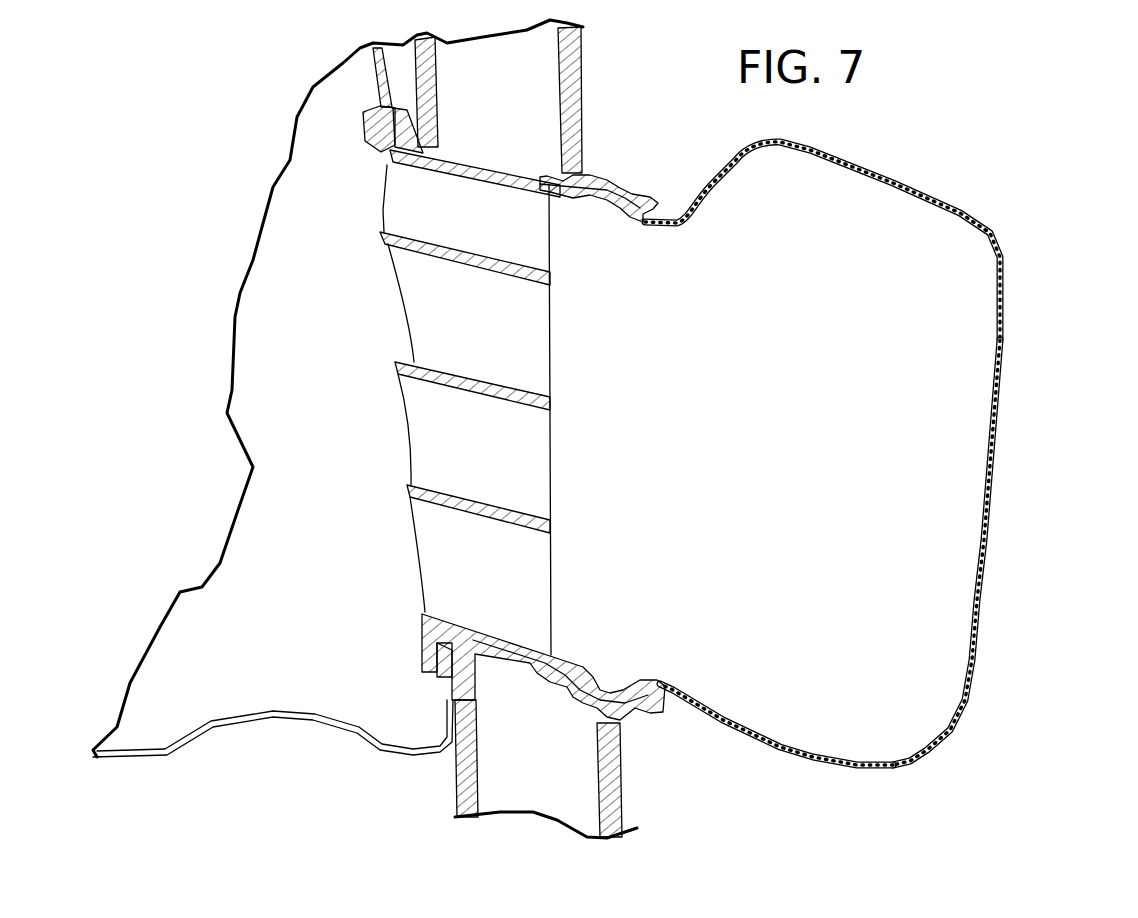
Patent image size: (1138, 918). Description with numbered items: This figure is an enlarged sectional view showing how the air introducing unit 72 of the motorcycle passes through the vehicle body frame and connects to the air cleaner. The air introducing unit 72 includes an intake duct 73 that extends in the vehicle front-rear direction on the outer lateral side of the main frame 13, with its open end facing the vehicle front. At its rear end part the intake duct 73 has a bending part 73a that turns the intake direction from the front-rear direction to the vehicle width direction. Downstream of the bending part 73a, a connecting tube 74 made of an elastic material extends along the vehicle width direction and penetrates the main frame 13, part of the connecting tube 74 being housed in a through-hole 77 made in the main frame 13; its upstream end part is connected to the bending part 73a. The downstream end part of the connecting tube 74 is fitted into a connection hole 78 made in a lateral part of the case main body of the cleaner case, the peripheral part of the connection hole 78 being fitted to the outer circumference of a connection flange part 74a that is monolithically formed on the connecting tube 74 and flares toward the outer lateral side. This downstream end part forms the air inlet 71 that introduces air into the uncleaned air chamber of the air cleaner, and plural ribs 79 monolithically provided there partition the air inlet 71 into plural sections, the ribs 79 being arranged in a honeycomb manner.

The main frame 13 is at (467, 773).
The air inlet 71 is at (483, 623).
The air introducing unit 72 is at (886, 486).
The intake duct 73 is at (726, 725).
The bending part 73a is at (933, 197).
The connecting tube 74 is at (477, 167).
The connection flange part 74a is at (422, 660).
The through-hole 77 is at (603, 174).
The connection hole 78 is at (383, 178).
The rib 79 is at (413, 482).